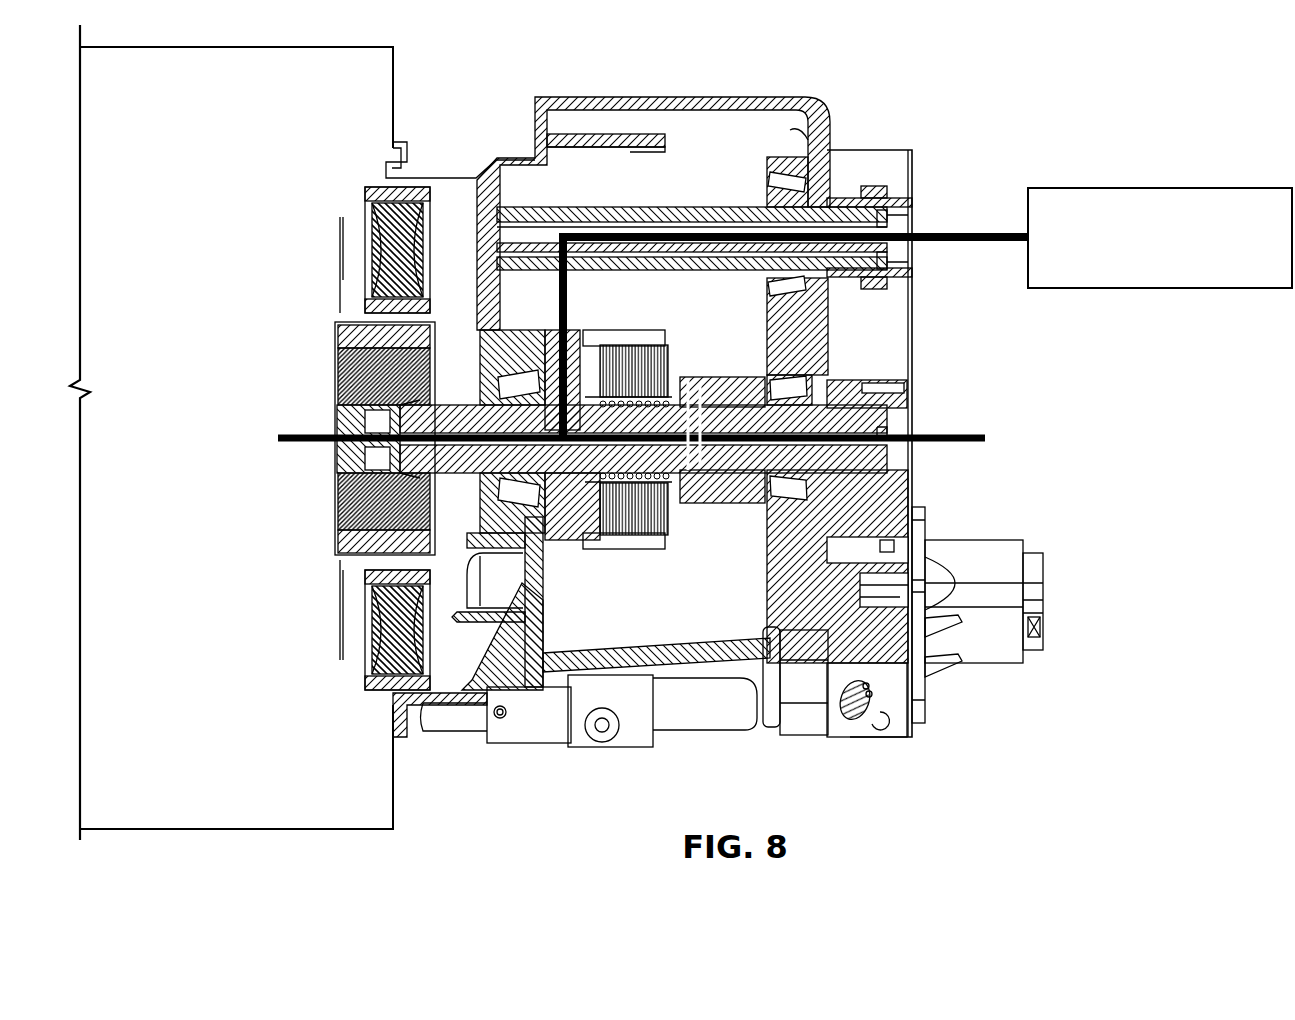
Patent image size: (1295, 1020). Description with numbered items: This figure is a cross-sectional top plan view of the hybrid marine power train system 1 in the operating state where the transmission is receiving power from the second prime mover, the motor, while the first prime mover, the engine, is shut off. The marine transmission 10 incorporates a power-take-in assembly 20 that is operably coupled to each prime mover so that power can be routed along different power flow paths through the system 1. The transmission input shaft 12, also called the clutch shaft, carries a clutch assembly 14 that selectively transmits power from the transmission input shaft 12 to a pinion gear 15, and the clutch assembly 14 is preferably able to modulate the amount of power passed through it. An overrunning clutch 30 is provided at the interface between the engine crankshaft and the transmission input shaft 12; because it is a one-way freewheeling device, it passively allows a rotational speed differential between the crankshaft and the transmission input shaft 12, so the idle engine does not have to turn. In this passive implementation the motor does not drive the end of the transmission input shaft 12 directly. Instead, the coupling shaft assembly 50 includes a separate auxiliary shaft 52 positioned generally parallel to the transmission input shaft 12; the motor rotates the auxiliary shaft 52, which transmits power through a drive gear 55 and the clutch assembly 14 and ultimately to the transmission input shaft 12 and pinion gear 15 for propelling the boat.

The hybrid marine power train system 1 is at (681, 429).
The marine transmission 10 is at (644, 428).
The transmission input shaft 12 is at (740, 452).
The clutch assembly 14 is at (627, 334).
The pinion gear 15 is at (693, 488).
The power-take-in (PTI) assembly 20 is at (443, 268).
The overrunning clutch 30 is at (338, 542).
The coupling shaft assembly 50 is at (700, 198).
The auxiliary shaft 52 is at (745, 195).
The drive gear 55 is at (661, 143).